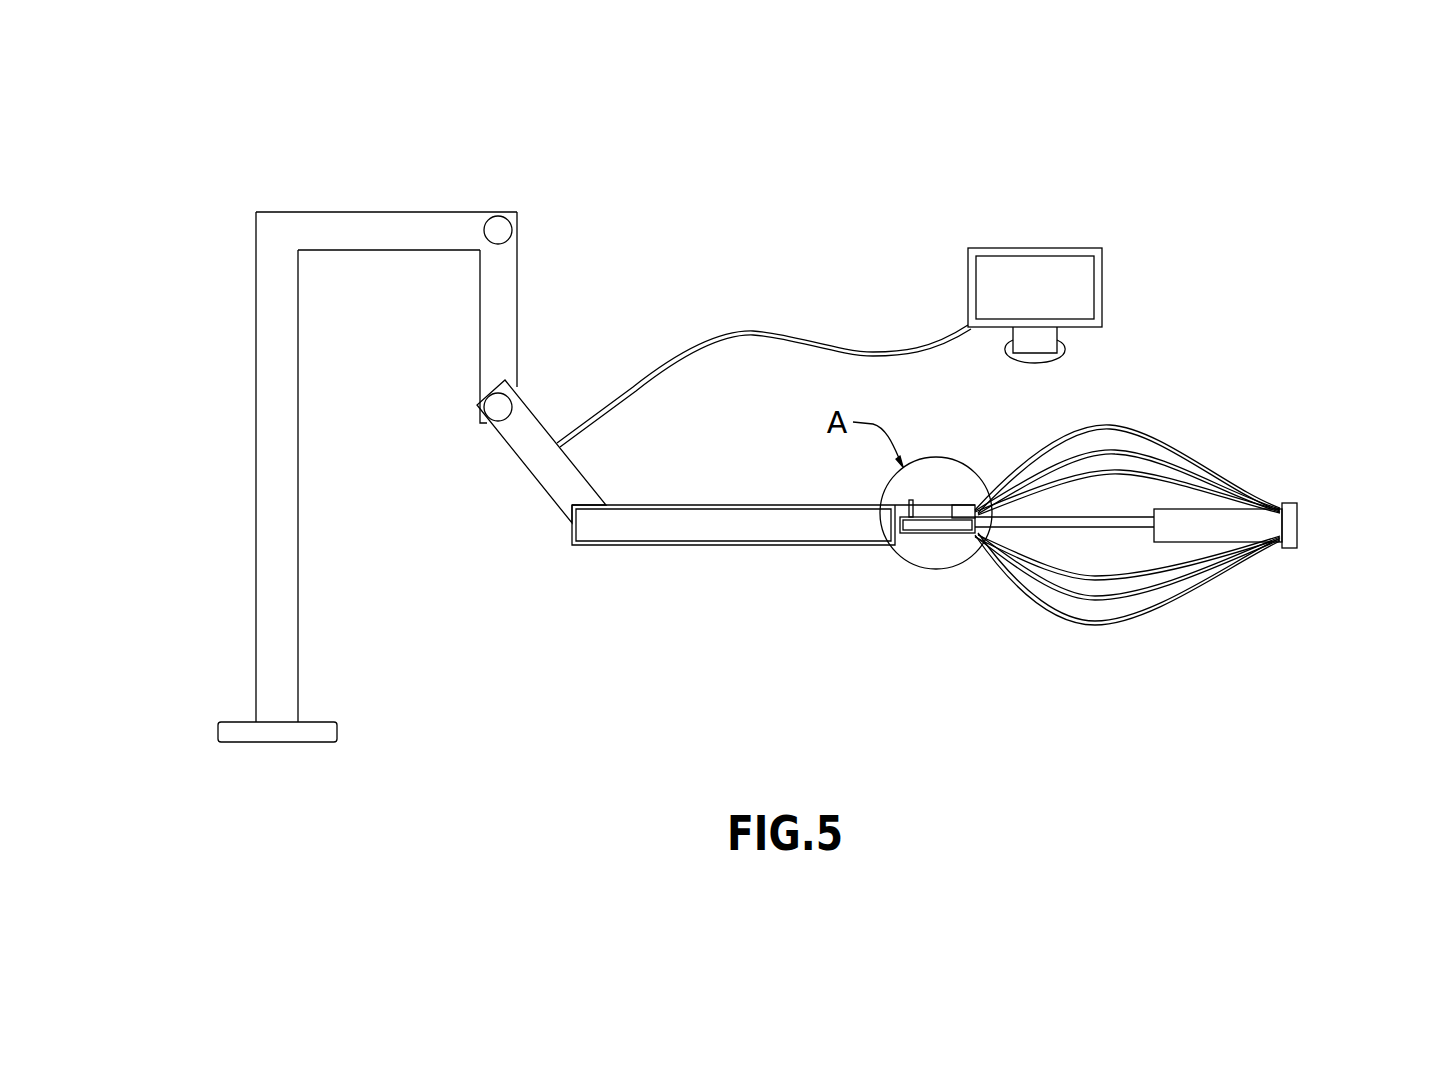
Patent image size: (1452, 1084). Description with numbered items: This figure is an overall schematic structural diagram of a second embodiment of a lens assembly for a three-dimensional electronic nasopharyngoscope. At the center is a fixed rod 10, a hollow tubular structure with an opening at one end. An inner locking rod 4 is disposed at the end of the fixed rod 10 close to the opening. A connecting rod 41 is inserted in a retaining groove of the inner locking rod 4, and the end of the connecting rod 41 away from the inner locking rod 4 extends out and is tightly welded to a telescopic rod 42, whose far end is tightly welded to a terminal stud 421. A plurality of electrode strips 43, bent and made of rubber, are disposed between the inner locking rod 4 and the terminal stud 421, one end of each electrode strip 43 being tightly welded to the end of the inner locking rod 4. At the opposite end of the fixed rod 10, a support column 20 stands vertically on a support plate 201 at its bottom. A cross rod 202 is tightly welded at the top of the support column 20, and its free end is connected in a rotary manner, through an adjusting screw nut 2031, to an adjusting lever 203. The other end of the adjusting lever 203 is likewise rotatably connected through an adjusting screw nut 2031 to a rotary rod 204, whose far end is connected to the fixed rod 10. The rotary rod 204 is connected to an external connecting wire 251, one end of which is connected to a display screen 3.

The support column 20 is at (277, 485).
The support plate 201 is at (322, 720).
The cross rod 202 is at (397, 232).
The adjusting lever 203 is at (518, 312).
The adjusting screw nut 2031 is at (512, 230).
The rotary rod 204 is at (537, 452).
The fixed rod 10 is at (655, 548).
The connecting wire 251 is at (780, 333).
The display screen 3 is at (1062, 253).
The inner locking rod 4 is at (930, 535).
The connecting rod 41 is at (1095, 517).
The telescopic rod 42 is at (1230, 527).
The terminal stud 421 is at (1297, 527).
The electrode strips 43 is at (1113, 623).